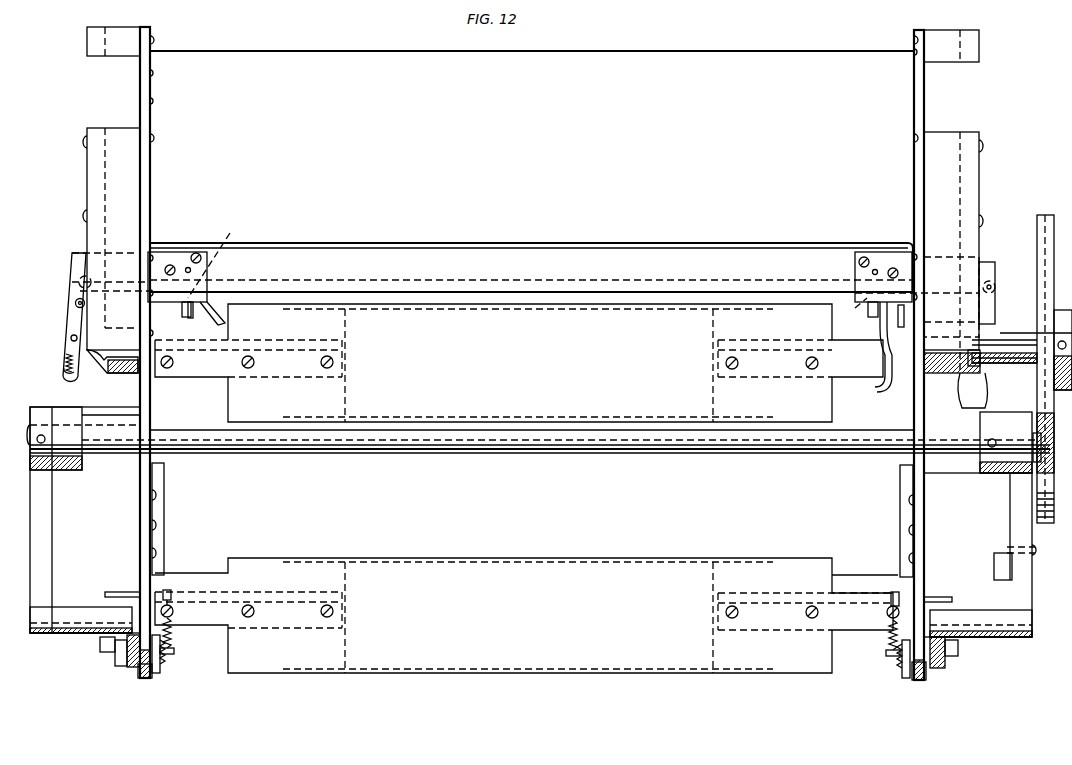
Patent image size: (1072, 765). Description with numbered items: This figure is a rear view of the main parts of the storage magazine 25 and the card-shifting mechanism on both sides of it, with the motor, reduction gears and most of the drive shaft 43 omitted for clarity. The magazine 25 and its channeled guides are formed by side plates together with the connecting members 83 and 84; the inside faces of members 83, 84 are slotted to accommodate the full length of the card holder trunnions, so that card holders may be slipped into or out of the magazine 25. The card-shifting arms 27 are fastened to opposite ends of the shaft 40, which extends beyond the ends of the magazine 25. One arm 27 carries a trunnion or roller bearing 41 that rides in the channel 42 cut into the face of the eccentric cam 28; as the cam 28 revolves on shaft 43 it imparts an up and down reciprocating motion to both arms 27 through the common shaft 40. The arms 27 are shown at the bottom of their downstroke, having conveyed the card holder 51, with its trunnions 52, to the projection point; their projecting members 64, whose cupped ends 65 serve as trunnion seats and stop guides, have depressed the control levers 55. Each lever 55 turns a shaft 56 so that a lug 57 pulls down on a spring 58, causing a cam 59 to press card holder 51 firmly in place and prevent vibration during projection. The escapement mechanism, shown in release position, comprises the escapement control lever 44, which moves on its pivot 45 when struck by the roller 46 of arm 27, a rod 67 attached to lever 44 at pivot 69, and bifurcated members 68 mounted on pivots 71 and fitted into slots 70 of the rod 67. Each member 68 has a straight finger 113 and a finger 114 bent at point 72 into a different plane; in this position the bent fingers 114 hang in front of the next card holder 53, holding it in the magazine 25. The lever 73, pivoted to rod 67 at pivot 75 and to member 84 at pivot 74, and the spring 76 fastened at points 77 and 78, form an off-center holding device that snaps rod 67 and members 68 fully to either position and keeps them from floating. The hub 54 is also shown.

The storage magazine 25 is at (531, 267).
The card-shifting arm 27 is at (47, 528).
The eccentric cam 28 is at (1045, 215).
The shaft 40 is at (203, 453).
The trunnion or roller bearing 41 is at (1031, 462).
The groove or channel 42 is at (1038, 405).
The drive shaft 43 is at (1024, 341).
The escapement control lever 44 is at (996, 291).
The pivot 45 is at (995, 356).
The camming means or roller 46 is at (993, 568).
The card holder 51 is at (332, 673).
The trunnion 52 is at (114, 592).
The card holder 53 is at (250, 303).
The hub 54 is at (115, 345).
The control lever 55 is at (110, 642).
The shaft 56 is at (146, 672).
The lug 57 is at (163, 668).
The spring 58 is at (170, 637).
The cam 59 is at (168, 590).
The projecting member 64 is at (75, 636).
The cup or cupped end 65 is at (61, 617).
The rod 67 is at (117, 290).
The bifurcated finger or member 68 is at (527, 268).
The pivot 69 is at (994, 322).
The slot 70 is at (181, 287).
The pivot 71 is at (189, 267).
The bend point 72 is at (182, 318).
The lever 73 is at (70, 347).
The pivot 74 is at (75, 303).
The pivot 75 is at (80, 282).
The spring 76 is at (66, 362).
The spring attachment point 77 is at (64, 374).
The spring attachment point 78 is at (72, 336).
The connecting member 83 is at (117, 53).
The connecting member 84 is at (87, 161).
The unbent or straight finger 113 is at (216, 319).
The bent or left finger 114 is at (188, 318).